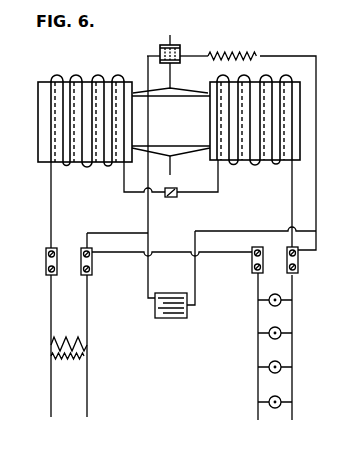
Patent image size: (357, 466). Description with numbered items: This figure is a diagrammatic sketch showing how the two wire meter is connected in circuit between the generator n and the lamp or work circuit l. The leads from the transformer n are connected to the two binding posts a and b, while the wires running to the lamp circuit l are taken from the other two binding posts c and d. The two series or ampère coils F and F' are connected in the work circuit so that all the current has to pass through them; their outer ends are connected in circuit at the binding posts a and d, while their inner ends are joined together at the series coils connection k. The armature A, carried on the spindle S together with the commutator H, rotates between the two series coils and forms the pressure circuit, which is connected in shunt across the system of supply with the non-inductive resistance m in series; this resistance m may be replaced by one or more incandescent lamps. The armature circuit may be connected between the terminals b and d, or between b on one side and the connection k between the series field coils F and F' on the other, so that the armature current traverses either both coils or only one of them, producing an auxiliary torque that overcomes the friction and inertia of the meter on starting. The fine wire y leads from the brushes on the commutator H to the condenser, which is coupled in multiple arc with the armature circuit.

The commutator H is at (160, 50).
The non-inductive resistance m is at (232, 48).
The spindle S is at (170, 77).
The armature A is at (171, 131).
The series coil F is at (85, 130).
The series coil F' is at (255, 130).
The series coils connection k is at (167, 196).
The binding post a is at (46, 259).
The binding post b is at (92, 265).
The binding post c is at (252, 263).
The binding post d is at (298, 263).
The fine wire y is at (171, 314).
The generator n is at (75, 349).
The lamp circuit l is at (280, 351).